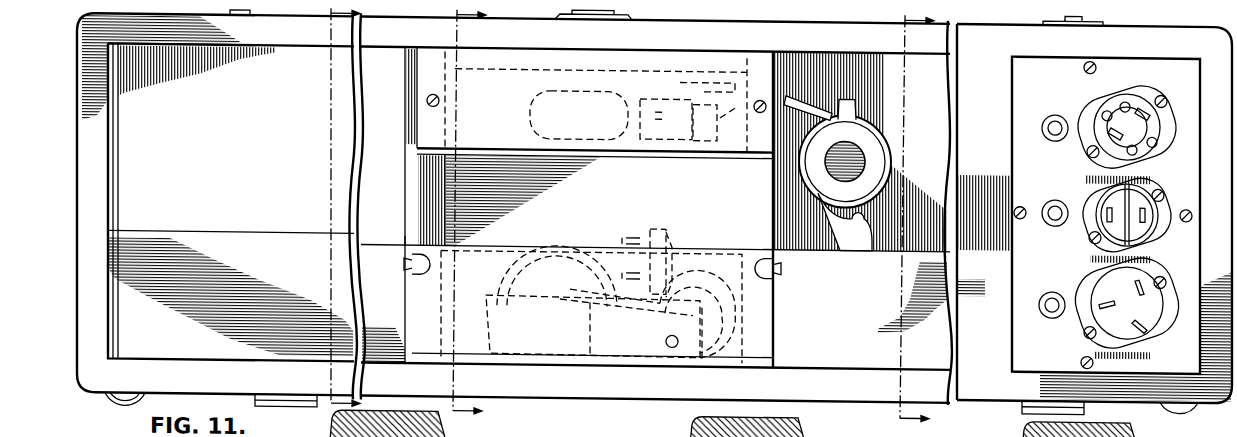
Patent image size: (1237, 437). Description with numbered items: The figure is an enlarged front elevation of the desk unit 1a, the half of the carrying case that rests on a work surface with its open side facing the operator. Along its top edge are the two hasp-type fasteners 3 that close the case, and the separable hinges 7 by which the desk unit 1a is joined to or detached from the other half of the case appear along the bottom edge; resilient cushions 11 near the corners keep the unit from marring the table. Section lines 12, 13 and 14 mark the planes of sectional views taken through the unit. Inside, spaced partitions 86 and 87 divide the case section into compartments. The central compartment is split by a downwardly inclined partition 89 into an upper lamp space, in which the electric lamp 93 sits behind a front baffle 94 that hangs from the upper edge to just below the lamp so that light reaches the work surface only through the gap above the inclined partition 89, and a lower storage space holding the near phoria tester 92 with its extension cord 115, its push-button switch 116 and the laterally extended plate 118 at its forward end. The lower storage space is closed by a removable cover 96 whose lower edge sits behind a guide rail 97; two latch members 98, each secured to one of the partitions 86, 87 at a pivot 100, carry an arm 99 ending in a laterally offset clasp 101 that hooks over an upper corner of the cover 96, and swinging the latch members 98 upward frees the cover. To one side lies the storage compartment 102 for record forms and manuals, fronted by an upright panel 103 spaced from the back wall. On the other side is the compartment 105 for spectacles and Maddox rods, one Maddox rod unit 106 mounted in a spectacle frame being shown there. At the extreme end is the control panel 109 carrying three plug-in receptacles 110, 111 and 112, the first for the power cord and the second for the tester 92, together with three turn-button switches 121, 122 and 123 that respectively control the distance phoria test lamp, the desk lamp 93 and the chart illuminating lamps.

The desk unit 1a is at (600, 394).
The hasp-type fastener 3 is at (238, 14).
The separable hinge 7 is at (292, 405).
The resilient cushion 11 is at (124, 392).
The section line 12 is at (467, 219).
The section line 13 is at (905, 225).
The section line 14 is at (325, 207).
The partition 86 is at (425, 162).
The partition 87 is at (772, 182).
The downwardly inclined partition 89 is at (455, 187).
The near phoria tester 92 is at (621, 310).
The electric lamp 93 is at (572, 133).
The front baffle 94 is at (432, 128).
The removable cover 96 is at (556, 243).
The guide rail 97 is at (773, 355).
The latch member 98 is at (408, 272).
The arm 99 is at (408, 240).
The pivot 100 is at (410, 256).
The laterally offset clasp 101 is at (408, 262).
The storage compartment 102 is at (218, 188).
The upright panel 103 is at (233, 242).
The compartment 105 is at (812, 46).
The Maddox rod unit 106 is at (862, 108).
The control panel 109 is at (1012, 162).
The receptacle 110 is at (1155, 125).
The receptacle 111 is at (1148, 222).
The receptacle 112 is at (1150, 320).
The extension cord 115 is at (571, 288).
The push-button switch 116 is at (666, 333).
The laterally extended plate 118 is at (505, 332).
The switch 121 is at (1055, 116).
The switch 122 is at (1055, 201).
The switch 123 is at (1052, 293).